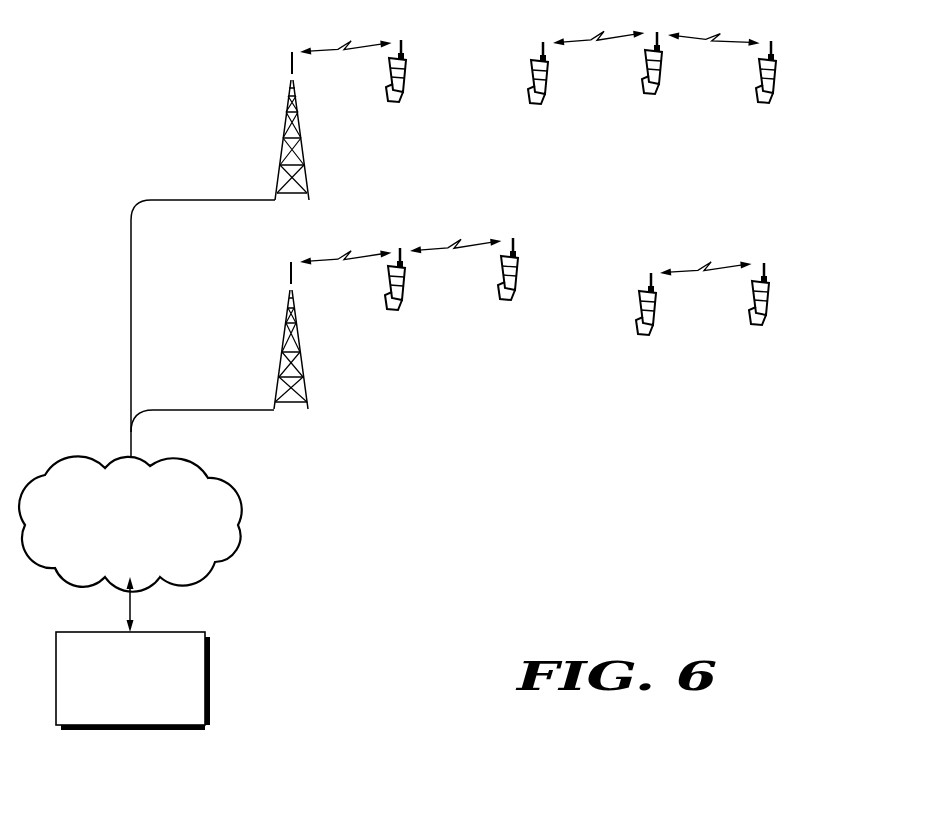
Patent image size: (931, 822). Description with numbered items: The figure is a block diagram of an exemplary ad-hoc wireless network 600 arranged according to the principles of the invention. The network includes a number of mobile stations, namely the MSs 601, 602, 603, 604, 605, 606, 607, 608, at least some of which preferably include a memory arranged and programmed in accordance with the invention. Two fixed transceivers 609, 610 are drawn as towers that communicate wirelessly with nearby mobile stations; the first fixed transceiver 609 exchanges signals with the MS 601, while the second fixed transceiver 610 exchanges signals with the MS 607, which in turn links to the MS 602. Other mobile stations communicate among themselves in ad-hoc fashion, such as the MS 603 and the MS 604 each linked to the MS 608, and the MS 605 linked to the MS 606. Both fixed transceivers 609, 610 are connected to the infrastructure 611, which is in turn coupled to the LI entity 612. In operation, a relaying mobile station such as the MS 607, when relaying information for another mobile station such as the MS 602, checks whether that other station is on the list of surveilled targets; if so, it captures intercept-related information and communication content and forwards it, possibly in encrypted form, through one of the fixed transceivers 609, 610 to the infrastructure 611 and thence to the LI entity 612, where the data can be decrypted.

The ad-hoc wireless network 600 is at (640, 600).
The mobile station 601 is at (404, 70).
The mobile station 602 is at (517, 268).
The mobile station 603 is at (548, 72).
The mobile station 604 is at (776, 73).
The mobile station 605 is at (655, 303).
The mobile station 606 is at (768, 292).
The relaying mobile station 607 is at (404, 278).
The mobile station 608 is at (662, 61).
The fixed transceiver 609 is at (308, 181).
The fixed transceiver 610 is at (307, 390).
The infrastructure 611 is at (236, 541).
The lawful intercept entity 612 is at (206, 678).